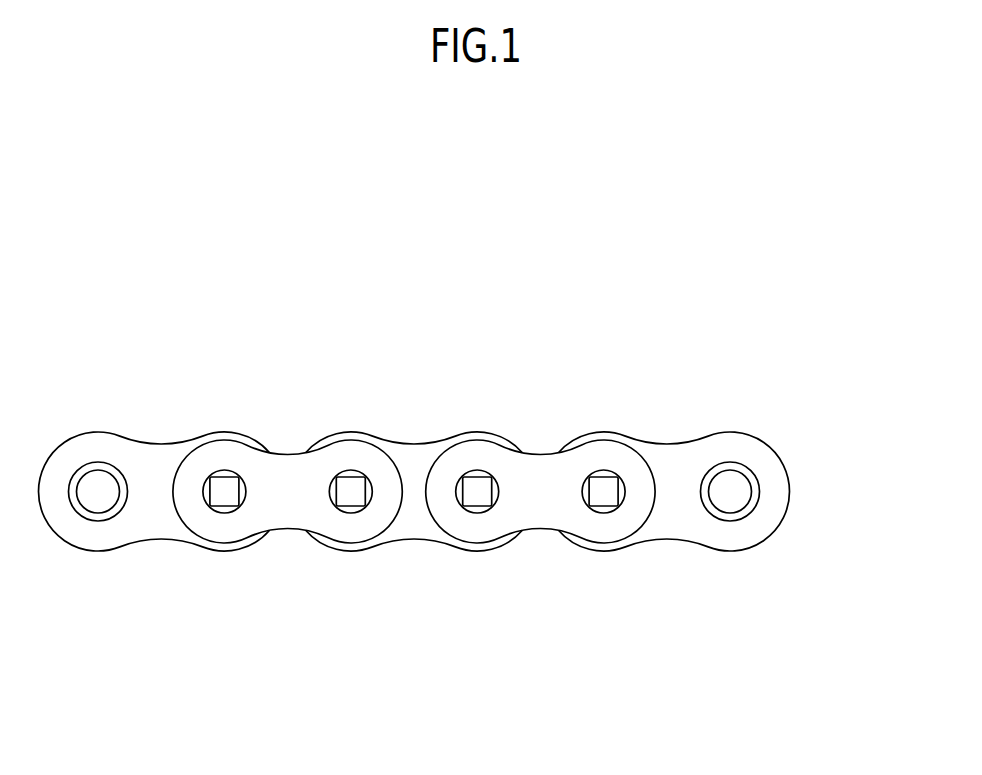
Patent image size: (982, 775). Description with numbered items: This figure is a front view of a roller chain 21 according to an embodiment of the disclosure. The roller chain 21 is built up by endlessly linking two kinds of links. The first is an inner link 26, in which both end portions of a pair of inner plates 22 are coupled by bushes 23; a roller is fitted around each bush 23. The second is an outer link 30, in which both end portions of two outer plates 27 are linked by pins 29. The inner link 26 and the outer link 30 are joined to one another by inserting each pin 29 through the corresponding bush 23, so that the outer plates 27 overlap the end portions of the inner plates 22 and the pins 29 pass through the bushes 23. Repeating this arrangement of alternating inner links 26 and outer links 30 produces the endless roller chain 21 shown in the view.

The roller chain 21 is at (700, 352).
The inner plate 22 is at (752, 446).
The bush 23 is at (755, 492).
The inner link 26 is at (772, 563).
The outer plate 27 is at (543, 460).
The pin 29 is at (475, 498).
The outer link 30 is at (539, 583).